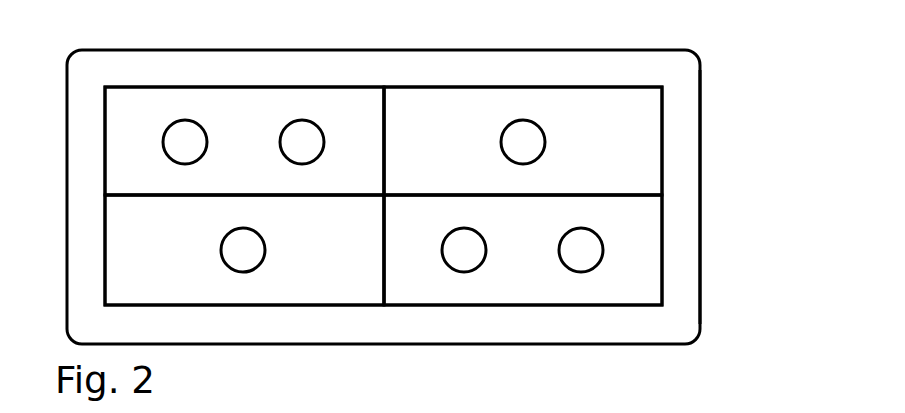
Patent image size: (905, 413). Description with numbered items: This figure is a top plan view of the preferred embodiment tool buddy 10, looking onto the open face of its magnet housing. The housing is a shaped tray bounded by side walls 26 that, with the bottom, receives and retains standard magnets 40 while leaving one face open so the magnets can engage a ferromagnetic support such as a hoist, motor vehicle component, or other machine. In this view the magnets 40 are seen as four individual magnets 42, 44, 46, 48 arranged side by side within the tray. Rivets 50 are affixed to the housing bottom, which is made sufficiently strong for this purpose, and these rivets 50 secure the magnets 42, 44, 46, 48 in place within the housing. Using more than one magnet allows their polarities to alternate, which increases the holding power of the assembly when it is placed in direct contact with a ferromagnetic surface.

The tool buddy 10 is at (714, 37).
The side walls 26 is at (701, 189).
The magnets 40 is at (248, 106).
The magnet 42 is at (316, 102).
The magnet 44 is at (457, 102).
The magnet 46 is at (218, 299).
The magnet 48 is at (476, 296).
The rivets 50 is at (220, 238).